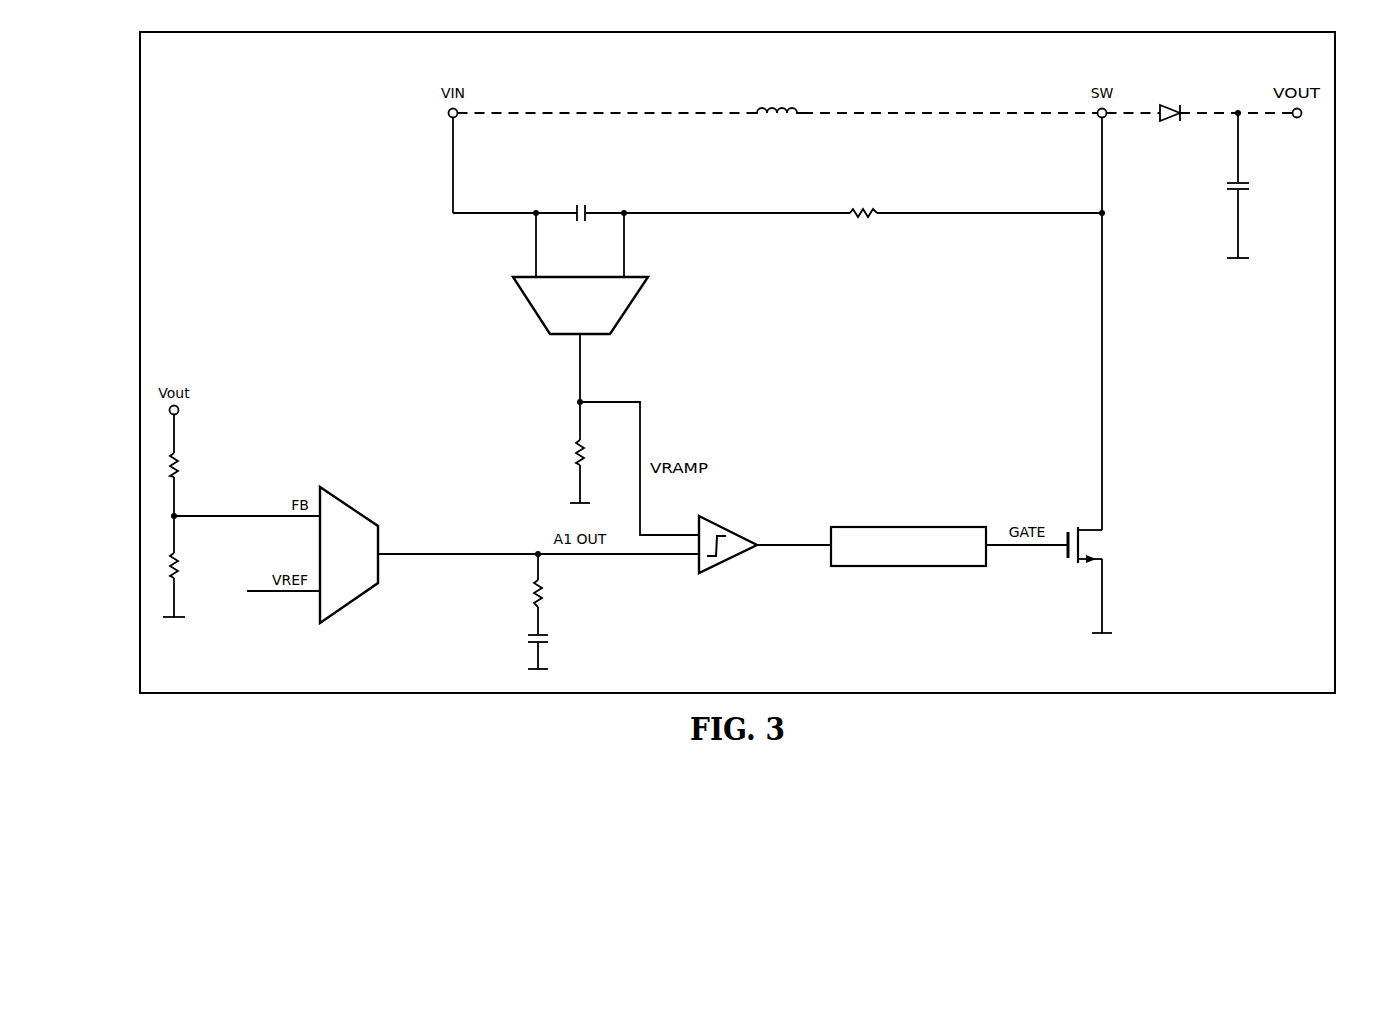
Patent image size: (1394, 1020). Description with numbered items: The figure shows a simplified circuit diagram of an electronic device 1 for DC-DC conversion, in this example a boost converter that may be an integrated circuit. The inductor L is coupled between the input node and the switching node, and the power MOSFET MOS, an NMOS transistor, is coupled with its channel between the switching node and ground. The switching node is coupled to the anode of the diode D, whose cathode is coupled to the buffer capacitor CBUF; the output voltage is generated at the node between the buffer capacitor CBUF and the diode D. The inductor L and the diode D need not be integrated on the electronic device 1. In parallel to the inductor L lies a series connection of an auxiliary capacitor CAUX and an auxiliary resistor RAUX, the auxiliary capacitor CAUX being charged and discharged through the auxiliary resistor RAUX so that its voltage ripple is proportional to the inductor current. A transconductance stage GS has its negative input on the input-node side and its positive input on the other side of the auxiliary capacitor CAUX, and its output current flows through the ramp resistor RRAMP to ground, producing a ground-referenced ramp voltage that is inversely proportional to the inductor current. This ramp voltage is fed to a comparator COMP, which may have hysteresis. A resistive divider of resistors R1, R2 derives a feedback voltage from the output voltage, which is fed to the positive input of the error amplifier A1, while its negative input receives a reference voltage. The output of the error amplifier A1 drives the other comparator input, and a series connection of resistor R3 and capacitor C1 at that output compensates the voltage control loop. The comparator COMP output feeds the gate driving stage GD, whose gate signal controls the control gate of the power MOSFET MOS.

The electronic device 1 is at (1338, 107).
The inductor L is at (776, 97).
The diode D is at (1170, 125).
The buffer capacitor CBUF is at (1215, 185).
The auxiliary capacitor CAUX is at (580, 201).
The auxiliary resistor RAUX is at (863, 202).
The transconductance stage GS is at (589, 273).
The ramp resistor RRAMP is at (551, 452).
The resistor R1 is at (186, 466).
The resistor R2 is at (182, 566).
The resistor R3 is at (549, 594).
The capacitor C1 is at (550, 649).
The error amplifier A1 is at (348, 535).
The comparator COMP is at (727, 561).
The gate driving stage GD is at (908, 558).
The power MOSFET MOS is at (1105, 376).